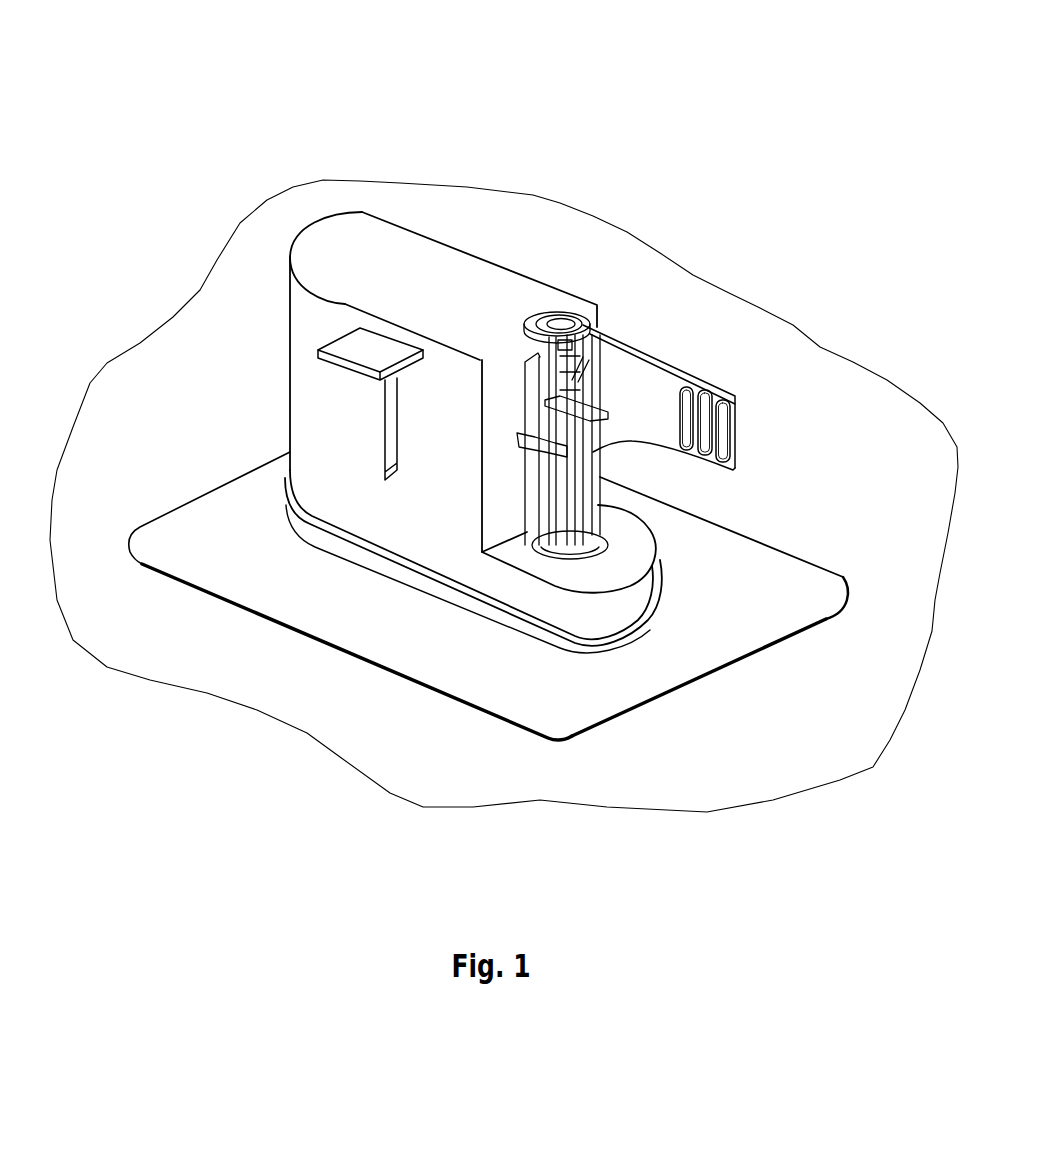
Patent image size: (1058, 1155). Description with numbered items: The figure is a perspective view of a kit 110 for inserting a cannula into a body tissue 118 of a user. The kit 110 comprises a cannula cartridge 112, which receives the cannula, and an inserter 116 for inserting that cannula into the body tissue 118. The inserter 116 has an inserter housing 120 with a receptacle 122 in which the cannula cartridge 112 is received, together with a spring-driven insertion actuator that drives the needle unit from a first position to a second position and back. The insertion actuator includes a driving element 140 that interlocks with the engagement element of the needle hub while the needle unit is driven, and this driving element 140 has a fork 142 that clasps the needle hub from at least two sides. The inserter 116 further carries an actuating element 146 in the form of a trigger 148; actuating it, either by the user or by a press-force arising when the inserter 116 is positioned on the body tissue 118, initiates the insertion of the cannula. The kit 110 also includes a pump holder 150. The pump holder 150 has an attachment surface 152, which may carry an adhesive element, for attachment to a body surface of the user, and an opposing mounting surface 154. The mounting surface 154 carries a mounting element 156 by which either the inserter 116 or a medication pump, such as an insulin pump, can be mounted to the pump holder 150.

The kit 110 is at (776, 165).
The cannula cartridge 112 is at (705, 346).
The inserter 116 is at (409, 338).
The body tissue 118 is at (138, 459).
The inserter housing 120 is at (310, 388).
The receptacle 122 is at (510, 424).
The driving element 140 is at (527, 352).
The fork 142 is at (576, 408).
The actuating element 146 is at (375, 363).
The trigger 148 is at (391, 429).
The pump holder 150 is at (488, 600).
The attachment surface 152 is at (734, 648).
The mounting surface 154 is at (783, 578).
The mounting element 156 is at (492, 607).